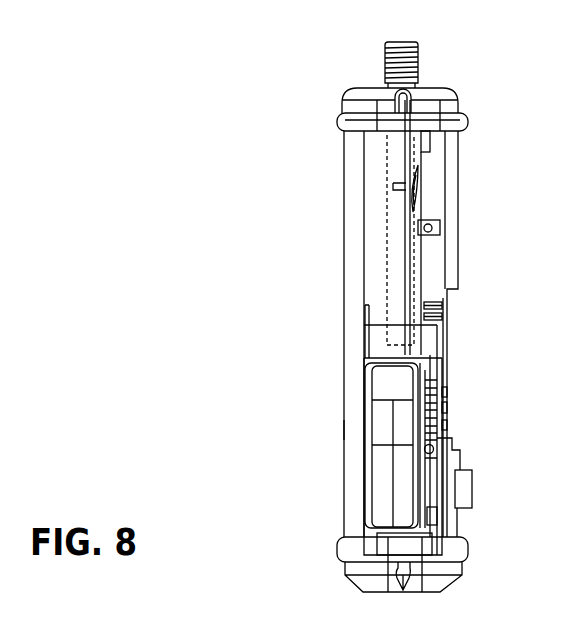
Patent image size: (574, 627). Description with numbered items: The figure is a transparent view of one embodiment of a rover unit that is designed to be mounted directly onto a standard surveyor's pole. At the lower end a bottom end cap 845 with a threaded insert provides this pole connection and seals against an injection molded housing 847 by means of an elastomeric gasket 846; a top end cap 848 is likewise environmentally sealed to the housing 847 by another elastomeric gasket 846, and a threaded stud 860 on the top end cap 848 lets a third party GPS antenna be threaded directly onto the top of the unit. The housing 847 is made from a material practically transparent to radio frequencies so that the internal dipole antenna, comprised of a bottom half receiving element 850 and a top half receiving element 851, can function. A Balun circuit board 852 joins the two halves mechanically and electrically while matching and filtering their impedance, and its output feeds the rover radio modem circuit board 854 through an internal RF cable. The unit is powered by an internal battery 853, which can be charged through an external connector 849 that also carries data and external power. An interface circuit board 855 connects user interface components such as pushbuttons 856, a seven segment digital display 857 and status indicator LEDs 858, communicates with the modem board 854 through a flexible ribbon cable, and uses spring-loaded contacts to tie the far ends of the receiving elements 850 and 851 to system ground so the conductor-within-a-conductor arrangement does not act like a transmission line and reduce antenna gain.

The bottom end cap 845 is at (350, 577).
The elastomeric gasket 846 is at (340, 120).
The housing 847 is at (343, 427).
The top end cap 848 is at (350, 91).
The external connector 849 is at (472, 492).
The bottom half receiving element 850 is at (364, 390).
The top half receiving element 851 is at (364, 253).
The Balun circuit board 852 is at (364, 332).
The internal battery 853 is at (378, 470).
The rover radio modem circuit board 854 is at (398, 208).
The interface circuit board 855 is at (440, 470).
The pushbuttons 856 is at (447, 427).
The seven segment digital display 857 is at (447, 352).
The status indicator LEDs 858 is at (447, 313).
The threaded stud 860 is at (420, 57).